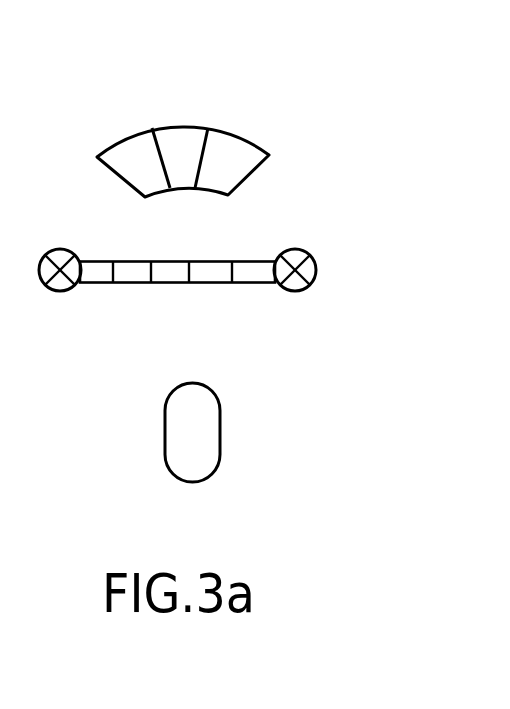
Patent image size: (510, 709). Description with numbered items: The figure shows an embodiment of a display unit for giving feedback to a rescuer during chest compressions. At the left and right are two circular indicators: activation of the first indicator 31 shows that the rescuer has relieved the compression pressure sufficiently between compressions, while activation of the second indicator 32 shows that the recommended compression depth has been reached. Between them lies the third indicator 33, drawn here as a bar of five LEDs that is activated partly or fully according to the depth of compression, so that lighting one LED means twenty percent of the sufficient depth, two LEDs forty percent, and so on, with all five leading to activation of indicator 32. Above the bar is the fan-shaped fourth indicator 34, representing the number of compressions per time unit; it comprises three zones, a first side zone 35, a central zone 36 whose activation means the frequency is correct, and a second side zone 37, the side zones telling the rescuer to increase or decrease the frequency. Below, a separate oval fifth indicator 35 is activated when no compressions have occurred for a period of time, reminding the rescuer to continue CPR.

The first indicator 31 is at (60, 248).
The second indicator 32 is at (296, 249).
The third indicator 33 is at (93, 295).
The fourth indicator 34 is at (181, 96).
The side zone / fifth indicator 35 is at (128, 181).
The central zone 36 is at (168, 166).
The side zone 37 is at (211, 181).